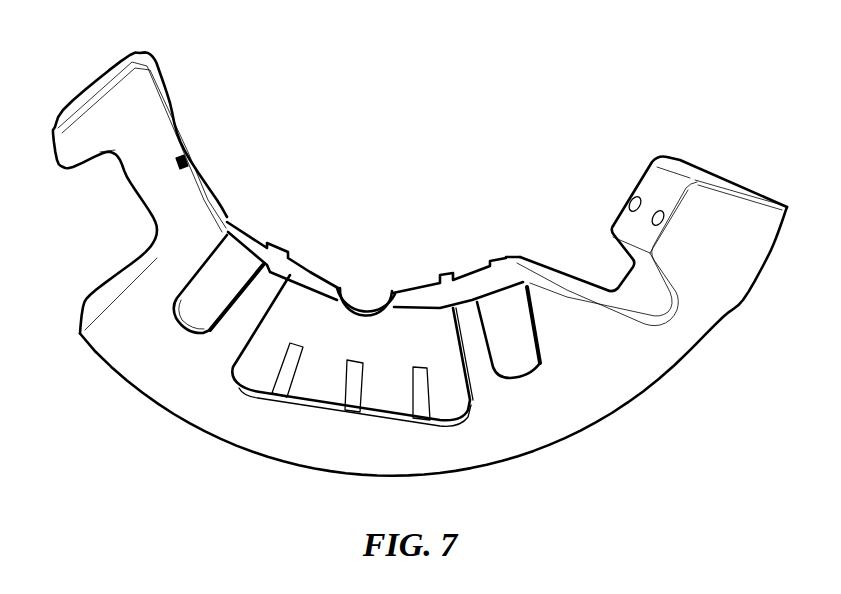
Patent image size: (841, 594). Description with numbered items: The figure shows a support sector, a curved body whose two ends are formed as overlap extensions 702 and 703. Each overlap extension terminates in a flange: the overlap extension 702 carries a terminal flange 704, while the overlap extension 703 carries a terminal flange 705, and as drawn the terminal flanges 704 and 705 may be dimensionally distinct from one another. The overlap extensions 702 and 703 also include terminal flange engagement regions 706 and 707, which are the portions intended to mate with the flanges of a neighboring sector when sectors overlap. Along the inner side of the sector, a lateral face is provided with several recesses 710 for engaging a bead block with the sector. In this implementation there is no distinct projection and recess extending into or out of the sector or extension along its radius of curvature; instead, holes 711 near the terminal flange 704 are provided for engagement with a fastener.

The overlap extension 702 is at (717, 307).
The overlap extension 703 is at (150, 137).
The terminal flange 704 is at (682, 170).
The terminal flange 705 is at (77, 122).
The terminal flange engagement region 706 is at (635, 283).
The terminal flange engagement region 707 is at (137, 200).
The recesses 710 is at (473, 275).
The holes 711 is at (656, 212).